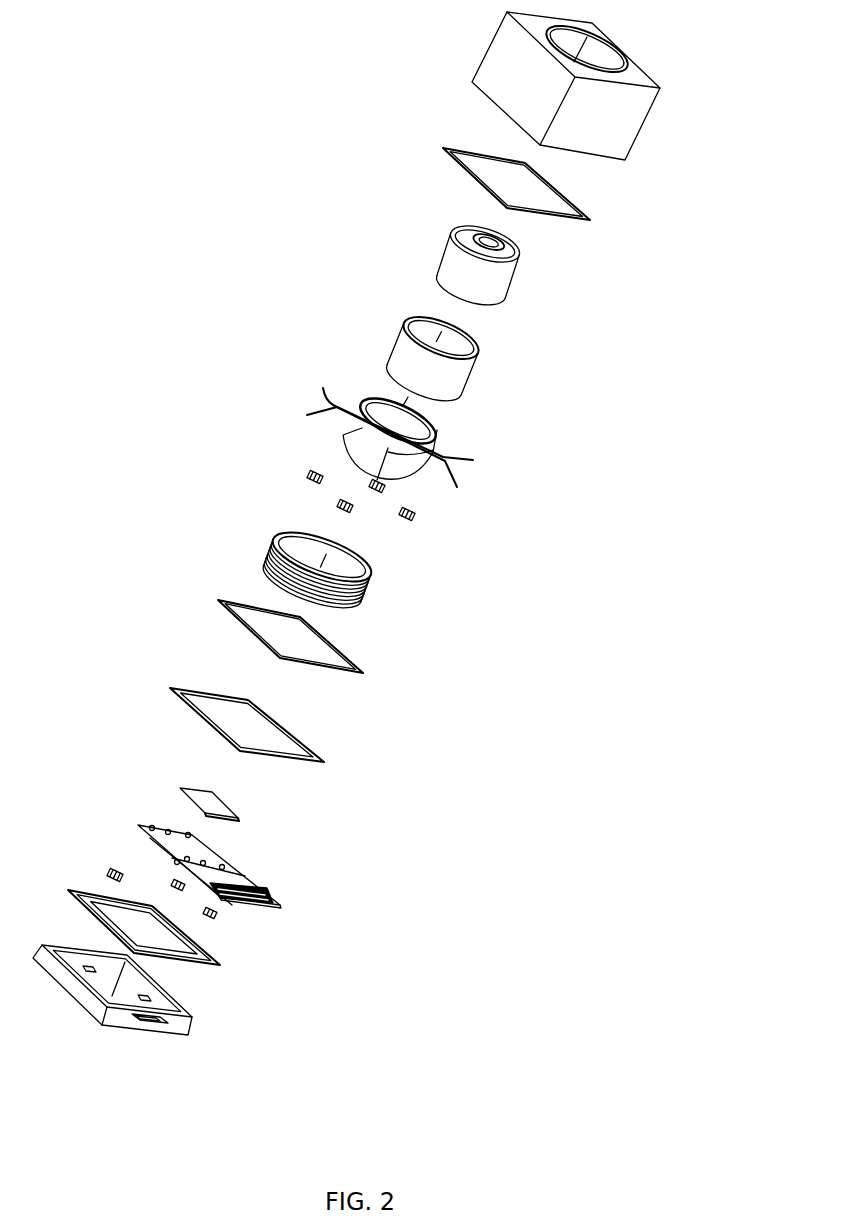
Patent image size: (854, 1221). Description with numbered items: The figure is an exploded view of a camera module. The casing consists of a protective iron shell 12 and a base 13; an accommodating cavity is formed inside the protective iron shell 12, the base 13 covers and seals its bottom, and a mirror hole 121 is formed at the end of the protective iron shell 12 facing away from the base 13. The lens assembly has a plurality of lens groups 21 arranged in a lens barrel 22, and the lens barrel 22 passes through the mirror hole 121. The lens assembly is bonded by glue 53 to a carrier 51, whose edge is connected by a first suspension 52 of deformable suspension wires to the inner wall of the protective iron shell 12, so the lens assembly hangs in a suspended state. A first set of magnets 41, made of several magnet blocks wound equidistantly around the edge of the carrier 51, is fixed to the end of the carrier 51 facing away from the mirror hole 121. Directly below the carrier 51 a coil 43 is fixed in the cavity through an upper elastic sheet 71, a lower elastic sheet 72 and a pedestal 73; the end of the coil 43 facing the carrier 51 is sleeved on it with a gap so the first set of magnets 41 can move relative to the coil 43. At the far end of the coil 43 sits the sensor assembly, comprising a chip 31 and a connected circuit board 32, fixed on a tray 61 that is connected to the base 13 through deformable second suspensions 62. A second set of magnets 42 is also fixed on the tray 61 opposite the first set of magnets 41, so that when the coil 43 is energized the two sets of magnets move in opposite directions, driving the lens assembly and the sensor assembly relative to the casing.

The protective iron shell 12 is at (632, 128).
The mirror hole 121 is at (610, 50).
The upper elastic sheet 71 is at (588, 217).
The lens group 21 is at (510, 243).
The lens barrel 22 is at (493, 290).
The glue 53 is at (453, 370).
The carrier 51 is at (433, 427).
The first suspension 52 is at (458, 482).
The first set of magnets 41 is at (417, 515).
The coil 43 is at (373, 592).
The lower elastic sheet 72 is at (358, 667).
The pedestal 73 is at (322, 757).
The chip 31 is at (218, 805).
The circuit board 32 is at (213, 853).
The second set of magnets 42 is at (108, 871).
The tray 61 is at (183, 940).
The second suspensions 62 is at (148, 995).
The base 13 is at (195, 1023).